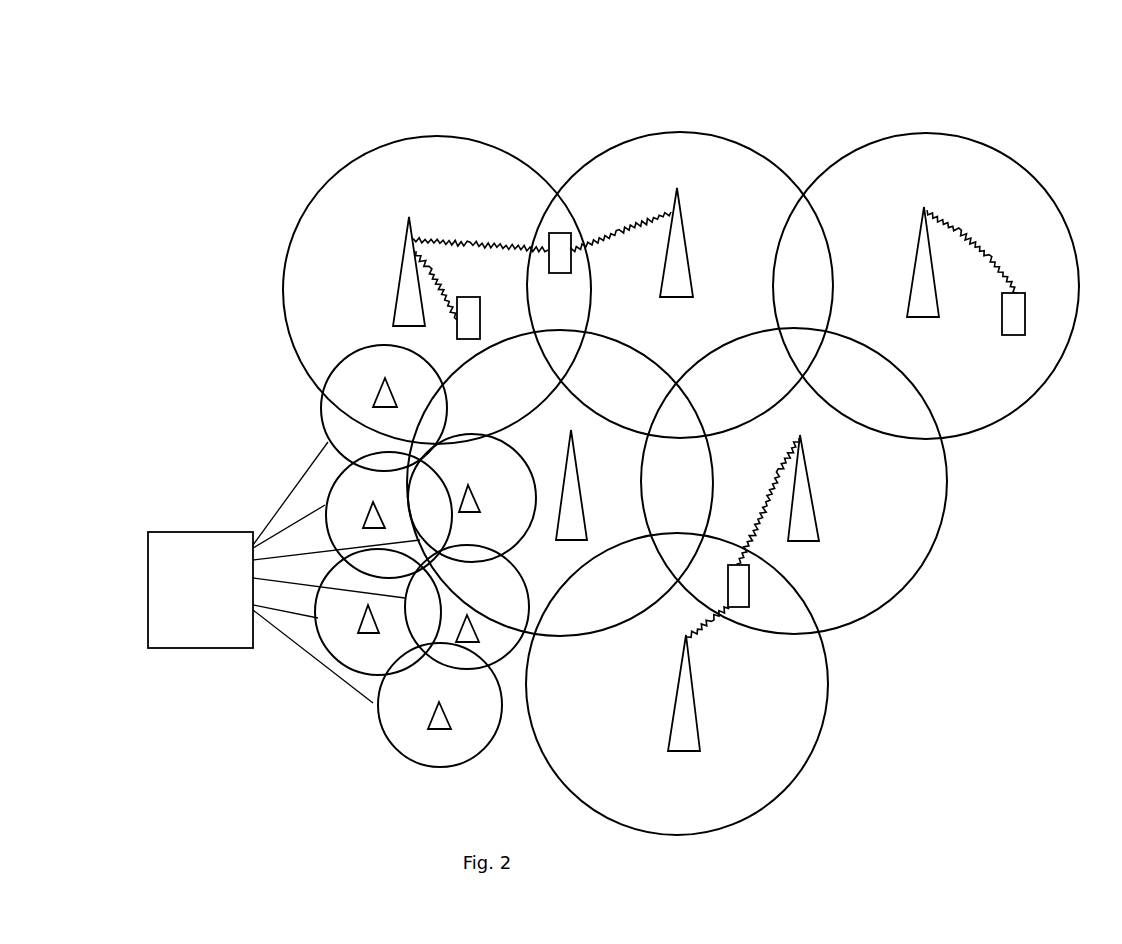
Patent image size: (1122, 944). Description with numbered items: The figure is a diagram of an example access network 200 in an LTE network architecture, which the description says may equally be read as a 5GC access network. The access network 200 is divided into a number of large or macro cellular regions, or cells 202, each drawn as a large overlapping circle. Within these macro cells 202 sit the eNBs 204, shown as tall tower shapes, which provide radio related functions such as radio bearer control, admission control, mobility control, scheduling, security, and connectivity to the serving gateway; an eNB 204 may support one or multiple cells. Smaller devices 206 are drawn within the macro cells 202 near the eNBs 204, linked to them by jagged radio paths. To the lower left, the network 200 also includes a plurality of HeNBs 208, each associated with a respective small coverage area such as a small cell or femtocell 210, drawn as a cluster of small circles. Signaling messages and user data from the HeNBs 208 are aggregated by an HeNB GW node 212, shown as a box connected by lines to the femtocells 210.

The access network 200 is at (973, 92).
The macro cellular region 202 is at (880, 782).
The eNB 204 is at (402, 267).
The user equipment 206 is at (925, 668).
The HeNB 208 is at (377, 393).
The femtocell 210 is at (320, 418).
The HeNB GW node 212 is at (284, 572).